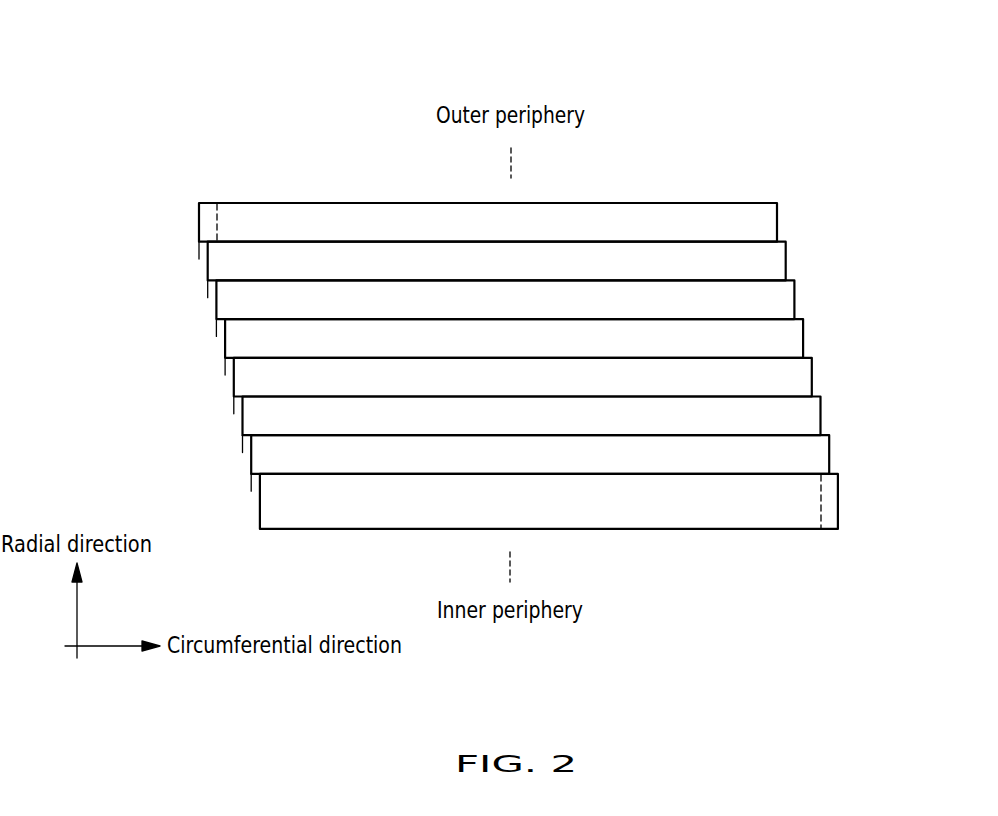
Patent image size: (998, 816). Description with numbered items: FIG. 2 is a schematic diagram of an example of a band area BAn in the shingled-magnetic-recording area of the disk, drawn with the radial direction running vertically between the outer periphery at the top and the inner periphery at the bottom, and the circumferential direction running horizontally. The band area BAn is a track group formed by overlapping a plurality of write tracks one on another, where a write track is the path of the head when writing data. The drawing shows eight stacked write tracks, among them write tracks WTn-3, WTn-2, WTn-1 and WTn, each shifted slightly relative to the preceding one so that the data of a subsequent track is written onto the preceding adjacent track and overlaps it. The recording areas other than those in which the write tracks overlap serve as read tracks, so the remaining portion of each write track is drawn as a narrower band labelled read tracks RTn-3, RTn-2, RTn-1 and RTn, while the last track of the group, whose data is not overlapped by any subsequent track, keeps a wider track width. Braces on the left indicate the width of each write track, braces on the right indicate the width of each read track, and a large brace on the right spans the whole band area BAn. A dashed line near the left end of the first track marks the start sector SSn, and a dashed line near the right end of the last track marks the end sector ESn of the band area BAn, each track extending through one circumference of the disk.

The write track WTn-3 is at (196, 203).
The write track WTn-2 is at (205, 242).
The write track WTn-1 is at (213, 280).
The write track WTn is at (222, 319).
The read track RTn-3 is at (779, 203).
The read track RTn-2 is at (788, 242).
The read track RTn-1 is at (796, 280).
The read track RTn is at (805, 319).
The start sector SSn is at (207, 211).
The end sector ESn is at (830, 508).
The band area BAn is at (932, 198).